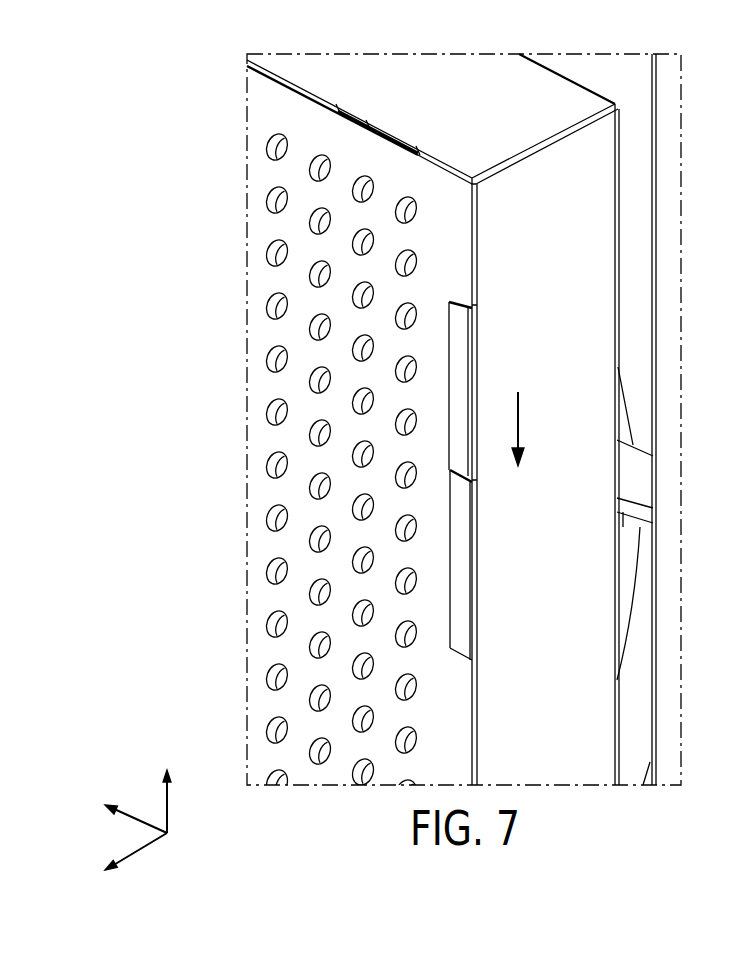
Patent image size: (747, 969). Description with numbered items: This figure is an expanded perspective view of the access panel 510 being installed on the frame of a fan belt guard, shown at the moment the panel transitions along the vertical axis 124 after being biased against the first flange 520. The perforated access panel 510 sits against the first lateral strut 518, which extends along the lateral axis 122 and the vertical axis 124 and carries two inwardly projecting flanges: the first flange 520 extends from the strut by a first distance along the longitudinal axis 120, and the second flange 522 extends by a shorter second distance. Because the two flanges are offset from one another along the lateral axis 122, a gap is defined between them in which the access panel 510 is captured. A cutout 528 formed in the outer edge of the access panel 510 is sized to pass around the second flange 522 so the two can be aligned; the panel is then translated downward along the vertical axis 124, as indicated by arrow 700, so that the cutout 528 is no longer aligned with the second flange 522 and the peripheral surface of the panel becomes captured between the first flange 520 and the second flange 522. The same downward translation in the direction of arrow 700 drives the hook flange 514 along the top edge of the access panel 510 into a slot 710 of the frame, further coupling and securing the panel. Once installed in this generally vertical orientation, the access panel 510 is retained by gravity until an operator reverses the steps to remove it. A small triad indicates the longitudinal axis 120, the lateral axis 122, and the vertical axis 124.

The access panel 510 is at (262, 386).
The hook flange 514 is at (370, 127).
The first lateral strut 518 is at (587, 290).
The first flange 520 is at (467, 508).
The second flange 522 is at (459, 335).
The cutout 528 is at (452, 562).
The arrow 700 is at (520, 425).
The slot 710 is at (436, 137).
The longitudinal axis 120 is at (143, 822).
The lateral axis 122 is at (143, 848).
The vertical axis 124 is at (168, 808).